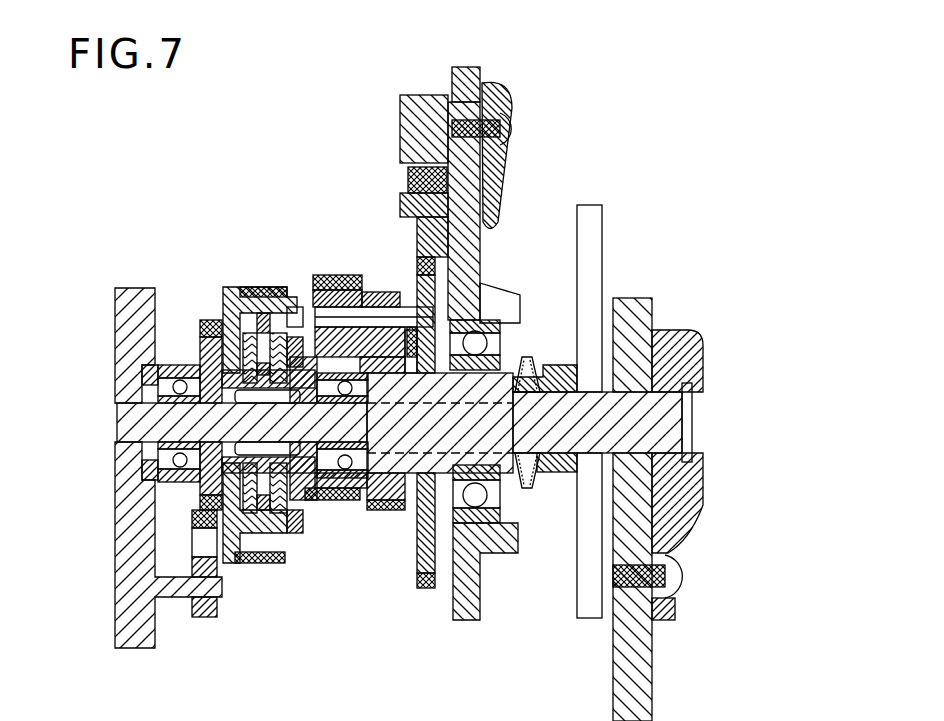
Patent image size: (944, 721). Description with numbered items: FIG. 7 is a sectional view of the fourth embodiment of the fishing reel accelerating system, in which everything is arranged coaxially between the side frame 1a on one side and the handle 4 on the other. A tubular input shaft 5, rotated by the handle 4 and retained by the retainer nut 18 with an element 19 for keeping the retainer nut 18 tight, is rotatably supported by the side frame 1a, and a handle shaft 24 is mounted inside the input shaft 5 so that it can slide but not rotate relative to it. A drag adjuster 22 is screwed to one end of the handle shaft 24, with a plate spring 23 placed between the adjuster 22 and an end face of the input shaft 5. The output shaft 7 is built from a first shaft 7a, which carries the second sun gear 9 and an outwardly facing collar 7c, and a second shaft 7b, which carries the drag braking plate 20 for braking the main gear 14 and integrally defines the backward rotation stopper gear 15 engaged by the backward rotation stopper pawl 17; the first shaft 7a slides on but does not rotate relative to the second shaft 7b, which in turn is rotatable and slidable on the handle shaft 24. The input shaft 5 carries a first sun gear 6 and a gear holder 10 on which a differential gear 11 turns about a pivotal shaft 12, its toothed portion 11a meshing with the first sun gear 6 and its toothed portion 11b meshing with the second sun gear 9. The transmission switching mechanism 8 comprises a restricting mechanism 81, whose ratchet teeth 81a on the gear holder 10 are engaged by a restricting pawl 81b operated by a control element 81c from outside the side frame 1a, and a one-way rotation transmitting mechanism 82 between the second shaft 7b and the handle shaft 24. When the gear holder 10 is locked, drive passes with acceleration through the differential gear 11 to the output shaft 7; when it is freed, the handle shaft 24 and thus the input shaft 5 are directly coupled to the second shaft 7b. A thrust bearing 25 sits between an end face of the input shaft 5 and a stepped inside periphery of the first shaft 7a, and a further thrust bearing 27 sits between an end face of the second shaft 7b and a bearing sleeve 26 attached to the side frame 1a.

The side frame 1a is at (122, 313).
The handle 4 is at (615, 680).
The tubular input shaft 5 is at (515, 352).
The first sun gear 6 is at (390, 507).
The output shaft 7 is at (265, 667).
The first shaft 7a is at (312, 487).
The second shaft 7b is at (265, 470).
The outwardly facing collar 7c is at (289, 533).
The transmission switching mechanism 8 is at (389, 178).
The second sun gear 9 is at (335, 490).
The gear holder 10 is at (487, 278).
The differential gear 11 is at (323, 274).
The toothed portion 11a is at (372, 288).
The toothed portion 11b is at (316, 272).
The pivotal shaft 12 is at (388, 290).
The main gear 14 is at (248, 285).
The backward rotation stopper gear 15 is at (198, 322).
The backward rotation stopper pawl 17 is at (200, 545).
The retainer nut 18 is at (687, 363).
The element for keeping the retainer nut tight 19 is at (697, 493).
The drag braking plate 20 is at (273, 330).
The drag adjuster 22 is at (595, 228).
The plate spring 23 is at (543, 365).
The handle shaft 24 is at (565, 458).
The thrust bearing 25 is at (352, 477).
The bearing sleeve 26 is at (120, 398).
The thrust bearing 27 is at (160, 378).
The restricting mechanism 81 is at (398, 236).
The ratchet teeth 81a is at (432, 263).
The restricting pawl 81b is at (482, 212).
The control element 81c is at (419, 96).
The one-way rotation transmitting mechanism 82 is at (235, 490).